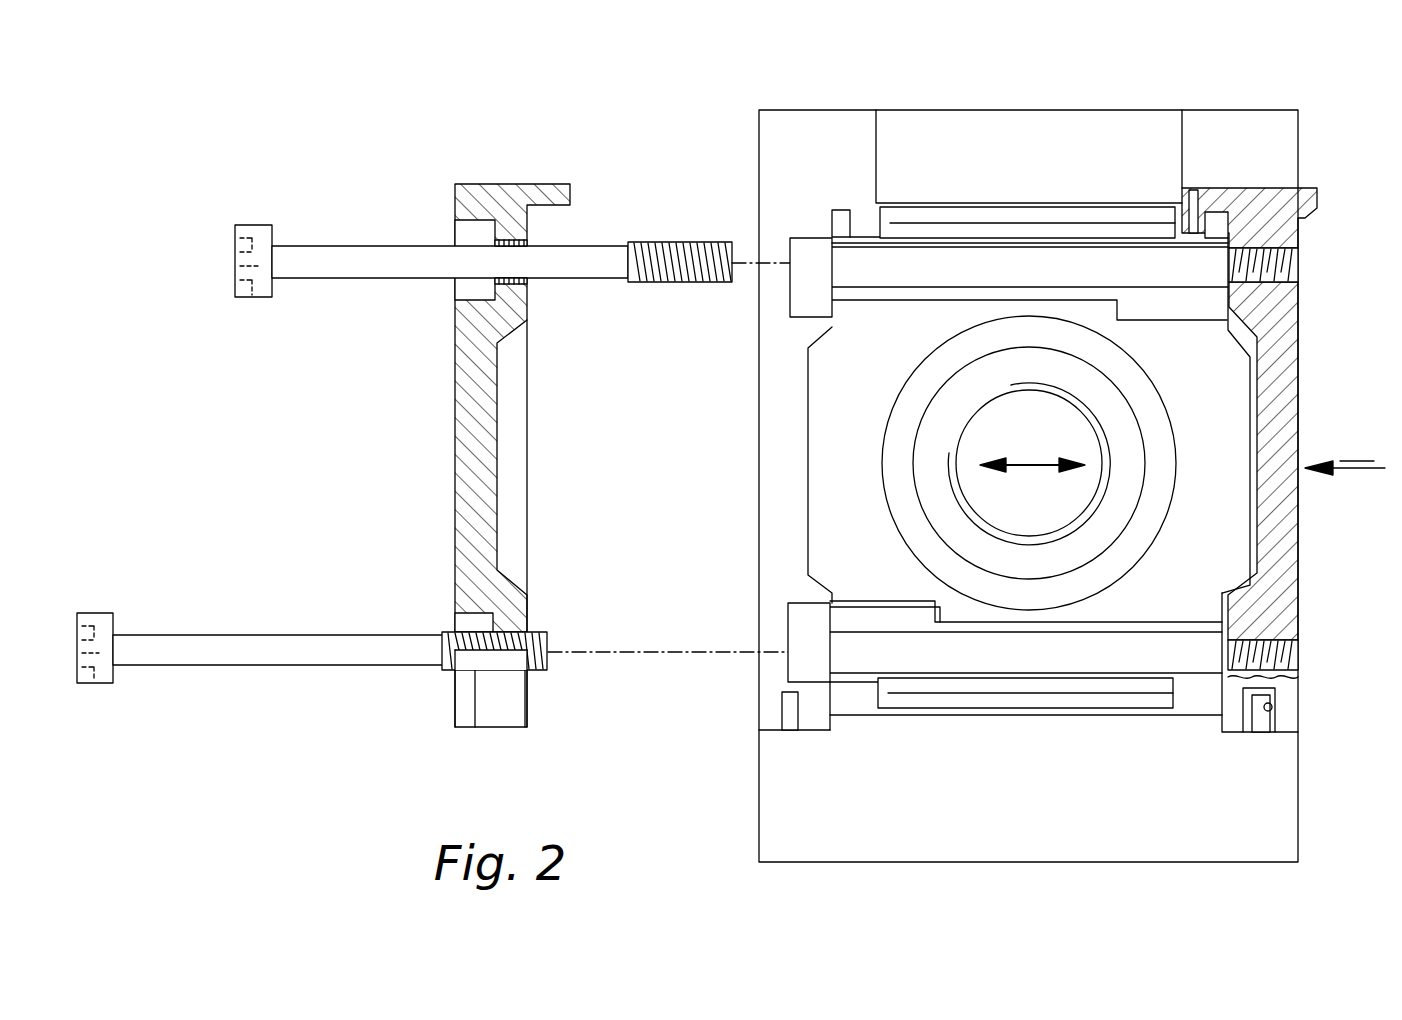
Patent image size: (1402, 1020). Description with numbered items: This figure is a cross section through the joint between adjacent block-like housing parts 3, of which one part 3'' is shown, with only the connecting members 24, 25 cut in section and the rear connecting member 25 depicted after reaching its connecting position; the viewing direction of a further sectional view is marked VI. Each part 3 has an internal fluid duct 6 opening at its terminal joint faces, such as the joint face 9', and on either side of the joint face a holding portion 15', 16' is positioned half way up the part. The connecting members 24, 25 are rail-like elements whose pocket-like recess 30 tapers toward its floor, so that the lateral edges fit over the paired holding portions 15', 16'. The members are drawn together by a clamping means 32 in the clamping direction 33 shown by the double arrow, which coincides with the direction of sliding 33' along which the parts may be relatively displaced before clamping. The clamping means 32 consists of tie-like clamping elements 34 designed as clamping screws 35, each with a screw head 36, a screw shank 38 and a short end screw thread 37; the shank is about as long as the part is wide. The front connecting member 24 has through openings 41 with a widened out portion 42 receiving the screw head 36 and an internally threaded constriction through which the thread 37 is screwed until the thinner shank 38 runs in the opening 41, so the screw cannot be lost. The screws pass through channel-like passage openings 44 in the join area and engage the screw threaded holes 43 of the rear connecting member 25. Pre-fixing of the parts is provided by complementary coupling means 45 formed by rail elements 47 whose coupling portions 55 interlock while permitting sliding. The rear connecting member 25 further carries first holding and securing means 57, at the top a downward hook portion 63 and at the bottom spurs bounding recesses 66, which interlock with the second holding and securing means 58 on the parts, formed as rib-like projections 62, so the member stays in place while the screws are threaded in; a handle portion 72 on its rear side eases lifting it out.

The housing part 3 is at (1028, 460).
The part 3'' is at (1028, 460).
The fluid duct 6 is at (1100, 425).
The joint face 9' is at (770, 484).
The holding portion 15' is at (962, 461).
The holding portion 16' is at (1295, 415).
The connecting member 24 is at (472, 412).
The connecting member 25 is at (1285, 325).
The pocket-like recess 30 is at (510, 432).
The clamping means 32 is at (652, 450).
The clamping direction 33 is at (1032, 494).
The direction of sliding 33' is at (1032, 494).
The clamping element 34 is at (422, 455).
The clamping screw 35 is at (422, 455).
The screw head 36 is at (253, 232).
The screw thread 37 is at (688, 255).
The screw shank 38 is at (325, 250).
The through opening 41 is at (508, 254).
The widened out portion 42 is at (472, 231).
The screw threaded hole 43 is at (1280, 268).
The passage opening 44 is at (916, 245).
The coupling means 45 is at (1029, 459).
The rail element 47 is at (1035, 255).
The coupling portion 55 is at (1120, 235).
The first holding and securing means 57 is at (1236, 429).
The hook portion 63 is at (1194, 205).
The second holding and securing means 58 is at (1301, 448).
The projection 62 is at (1215, 215).
The recess 66 is at (1272, 708).
The handle portion 72 is at (1318, 200).
The section indicator VI is at (1345, 452).